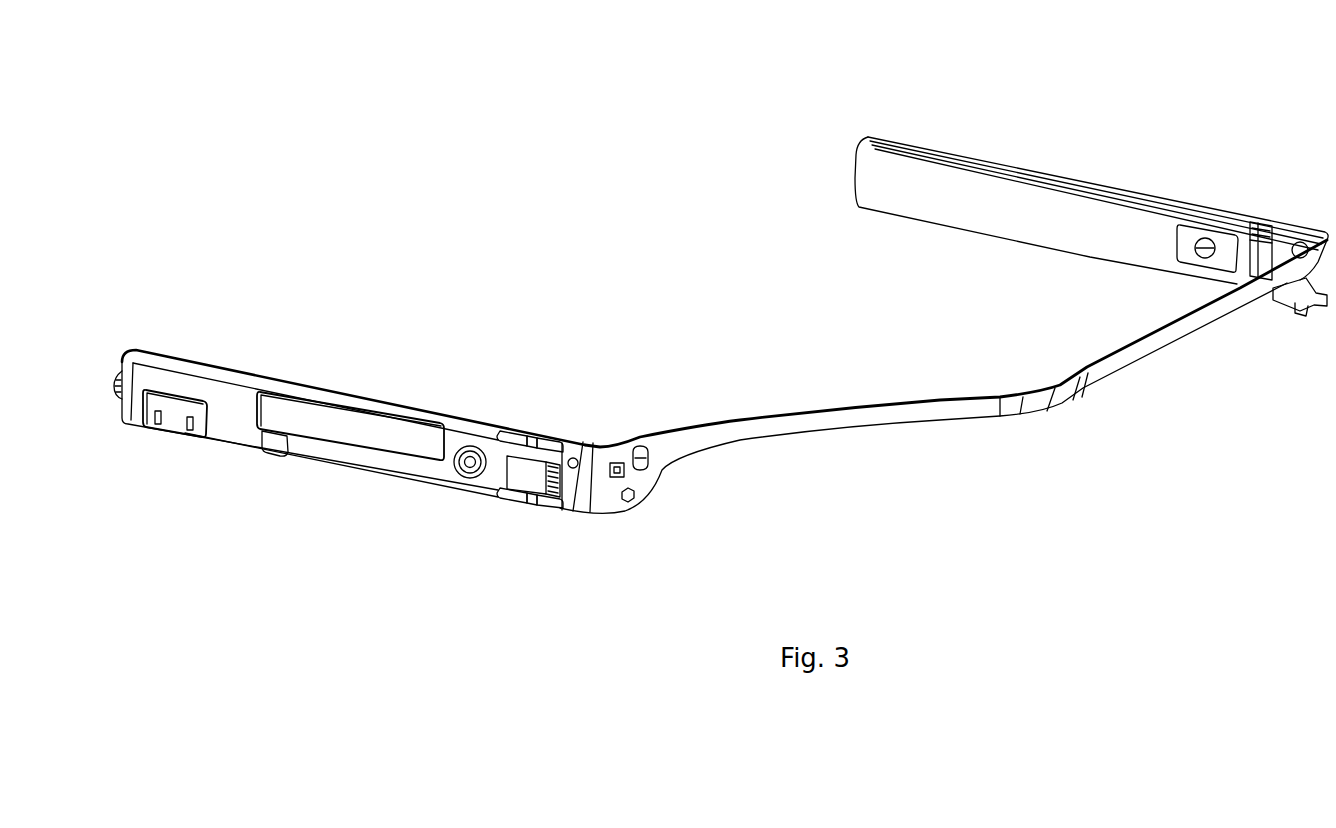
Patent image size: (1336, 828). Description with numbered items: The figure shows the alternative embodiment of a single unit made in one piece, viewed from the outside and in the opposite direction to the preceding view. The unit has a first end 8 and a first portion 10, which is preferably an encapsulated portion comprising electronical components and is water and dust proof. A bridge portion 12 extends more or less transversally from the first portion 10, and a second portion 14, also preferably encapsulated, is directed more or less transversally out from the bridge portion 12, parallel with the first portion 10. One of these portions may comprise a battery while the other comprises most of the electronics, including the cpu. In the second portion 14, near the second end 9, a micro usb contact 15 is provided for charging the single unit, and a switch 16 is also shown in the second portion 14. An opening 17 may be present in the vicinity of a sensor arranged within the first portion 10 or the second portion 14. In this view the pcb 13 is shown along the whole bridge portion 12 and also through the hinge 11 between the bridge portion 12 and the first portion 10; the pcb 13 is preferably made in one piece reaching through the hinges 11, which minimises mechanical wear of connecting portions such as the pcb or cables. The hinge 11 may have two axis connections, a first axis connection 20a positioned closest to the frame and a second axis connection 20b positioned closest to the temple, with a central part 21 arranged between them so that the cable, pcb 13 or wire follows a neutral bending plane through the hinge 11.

The first end 8 is at (855, 167).
The second end 9 is at (122, 363).
The first portion 10 is at (1023, 200).
The hinge 11 is at (535, 433).
The bridge portion 12 is at (1038, 390).
The pcb 13 is at (1262, 258).
The second portion 14 is at (230, 397).
The micro usb contact 15 is at (172, 420).
The switch 16 is at (273, 445).
The opening 17 is at (367, 428).
The first axis connection 20a is at (550, 433).
The second axis connection 20b is at (523, 428).
The central part 21 is at (518, 473).